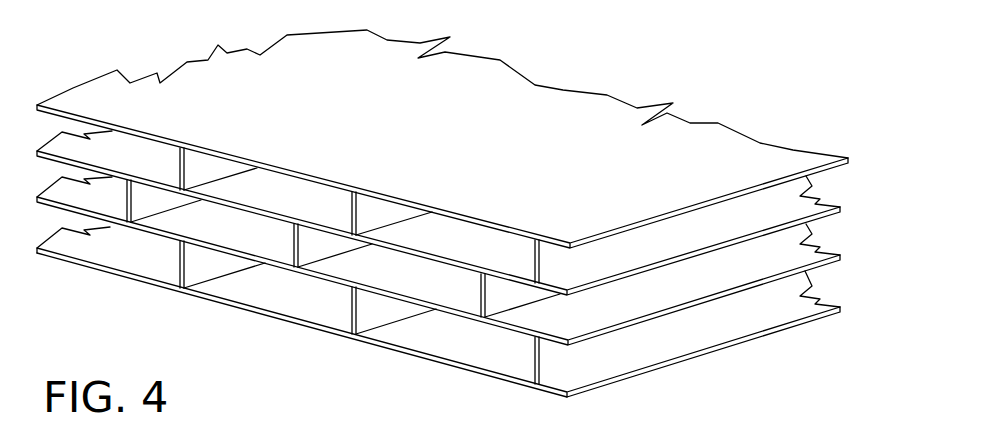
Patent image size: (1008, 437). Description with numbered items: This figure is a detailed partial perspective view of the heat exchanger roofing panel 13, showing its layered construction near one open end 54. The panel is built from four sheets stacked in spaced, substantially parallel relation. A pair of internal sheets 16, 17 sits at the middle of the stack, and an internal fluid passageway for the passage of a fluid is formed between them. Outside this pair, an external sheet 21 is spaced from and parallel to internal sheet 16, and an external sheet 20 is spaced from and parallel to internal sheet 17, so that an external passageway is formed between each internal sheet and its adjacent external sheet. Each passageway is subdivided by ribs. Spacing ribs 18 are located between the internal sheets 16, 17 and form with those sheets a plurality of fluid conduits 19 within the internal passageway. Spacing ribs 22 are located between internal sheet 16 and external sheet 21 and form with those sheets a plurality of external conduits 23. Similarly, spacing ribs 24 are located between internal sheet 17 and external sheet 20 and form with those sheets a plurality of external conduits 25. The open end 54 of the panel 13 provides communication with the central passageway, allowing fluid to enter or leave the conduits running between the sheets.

The panel 13 is at (729, 111).
The external sheet 21 is at (846, 167).
The internal sheet 16 is at (845, 211).
The internal sheet 17 is at (845, 258).
The external sheet 20 is at (845, 310).
The open end 54 is at (193, 304).
The spacing ribs 22 is at (218, 182).
The external conduits 23 is at (149, 167).
The spacing ribs 18 is at (163, 212).
The fluid conduits 19 is at (121, 212).
The spacing ribs 24 is at (219, 281).
The external conduits 25 is at (149, 262).